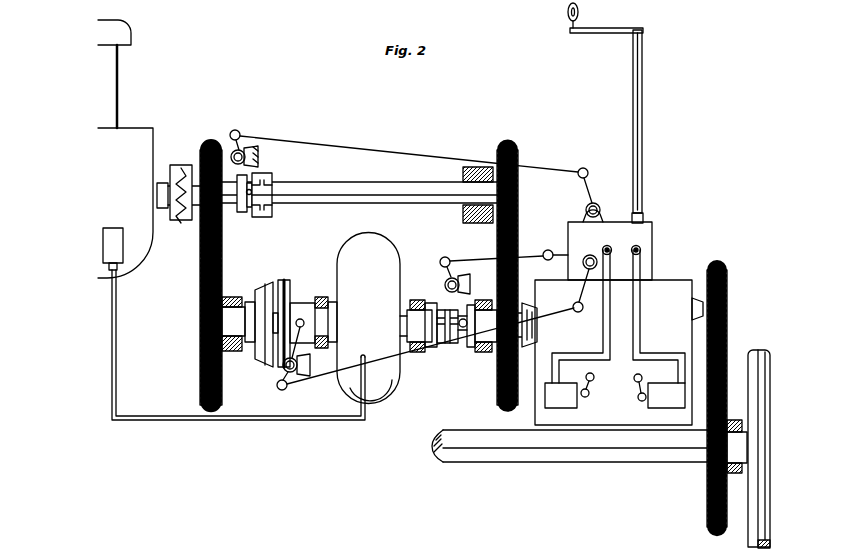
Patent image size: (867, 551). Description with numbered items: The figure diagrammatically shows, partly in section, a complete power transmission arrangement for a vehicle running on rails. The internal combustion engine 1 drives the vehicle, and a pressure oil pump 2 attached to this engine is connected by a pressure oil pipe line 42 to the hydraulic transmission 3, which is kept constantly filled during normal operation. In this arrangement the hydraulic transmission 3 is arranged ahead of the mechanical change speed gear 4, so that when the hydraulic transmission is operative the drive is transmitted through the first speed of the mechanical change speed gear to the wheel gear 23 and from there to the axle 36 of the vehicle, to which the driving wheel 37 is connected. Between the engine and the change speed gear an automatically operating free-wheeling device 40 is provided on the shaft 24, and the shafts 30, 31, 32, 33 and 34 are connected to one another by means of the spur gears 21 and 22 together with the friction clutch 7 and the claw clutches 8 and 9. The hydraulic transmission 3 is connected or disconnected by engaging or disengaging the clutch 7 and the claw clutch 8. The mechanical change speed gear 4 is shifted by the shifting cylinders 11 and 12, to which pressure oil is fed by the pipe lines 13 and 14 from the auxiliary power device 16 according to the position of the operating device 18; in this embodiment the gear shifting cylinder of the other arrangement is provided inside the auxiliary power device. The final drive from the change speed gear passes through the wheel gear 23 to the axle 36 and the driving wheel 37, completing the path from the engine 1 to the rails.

The internal combustion engine 1 is at (107, 72).
The pressure oil pump 2 is at (113, 250).
The hydraulic transmission 3 is at (372, 260).
The mechanical change speed gear 4 is at (545, 412).
The friction clutch 7 is at (280, 290).
The claw clutch 8 is at (437, 308).
The claw clutch 9 is at (266, 185).
The shifting cylinder 11 is at (568, 400).
The shifting cylinder 12 is at (658, 402).
The pipe line 13 is at (605, 345).
The pipe line 14 is at (638, 345).
The auxiliary power device 16 is at (638, 238).
The operating device 18 is at (593, 33).
The spur gear 21 is at (200, 330).
The spur gear 22 is at (511, 254).
The wheel gear 23 is at (728, 390).
The shaft 24 is at (163, 208).
The shaft 30 is at (345, 185).
The shaft 31 is at (232, 298).
The shaft 32 is at (322, 298).
The shaft 33 is at (478, 349).
The shaft 34 is at (705, 315).
The axle 36 is at (530, 447).
The driving wheel 37 is at (762, 522).
The free-wheeling device 40 is at (185, 165).
The pressure oil pipe line 42 is at (145, 417).